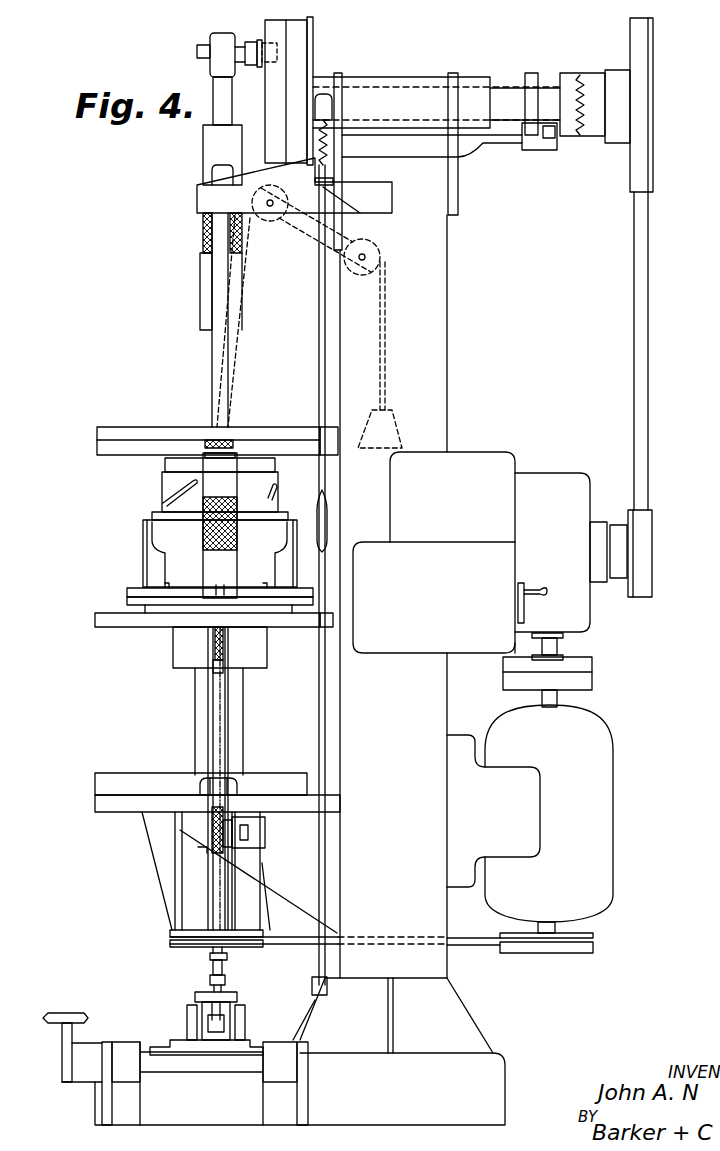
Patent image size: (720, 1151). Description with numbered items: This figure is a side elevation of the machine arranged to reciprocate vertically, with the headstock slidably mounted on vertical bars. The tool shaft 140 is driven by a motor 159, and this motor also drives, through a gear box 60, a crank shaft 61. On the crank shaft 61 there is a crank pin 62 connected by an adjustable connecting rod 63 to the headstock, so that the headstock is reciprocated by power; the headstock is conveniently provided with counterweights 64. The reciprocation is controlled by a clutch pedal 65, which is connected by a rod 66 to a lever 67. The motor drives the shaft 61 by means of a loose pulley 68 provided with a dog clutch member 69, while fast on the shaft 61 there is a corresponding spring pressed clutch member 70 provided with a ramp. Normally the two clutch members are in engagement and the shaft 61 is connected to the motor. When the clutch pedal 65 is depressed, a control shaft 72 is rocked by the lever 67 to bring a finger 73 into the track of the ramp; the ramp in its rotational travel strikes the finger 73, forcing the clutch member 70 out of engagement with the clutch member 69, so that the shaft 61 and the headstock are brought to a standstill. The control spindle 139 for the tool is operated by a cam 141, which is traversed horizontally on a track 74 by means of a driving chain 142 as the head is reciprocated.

The gear box 60 is at (583, 615).
The crank shaft 61 is at (507, 100).
The crank pin 62 is at (248, 49).
The adjustable connecting rod 63 is at (200, 296).
The counterweights 64 is at (385, 425).
The clutch pedal 65 is at (68, 1012).
The rod 66 is at (319, 257).
The lever 67 is at (323, 94).
The loose pulley 68 is at (655, 53).
The dog clutch member 69 is at (596, 90).
The spring pressed clutch member 70 is at (578, 135).
The control shaft 72 is at (487, 143).
The finger 73 is at (550, 150).
The track 74 is at (185, 1042).
The control spindle 139 is at (210, 957).
The tool shaft 140 is at (200, 711).
The cam 141 is at (212, 985).
The driving chain 142 is at (215, 870).
The motor 159 is at (607, 822).